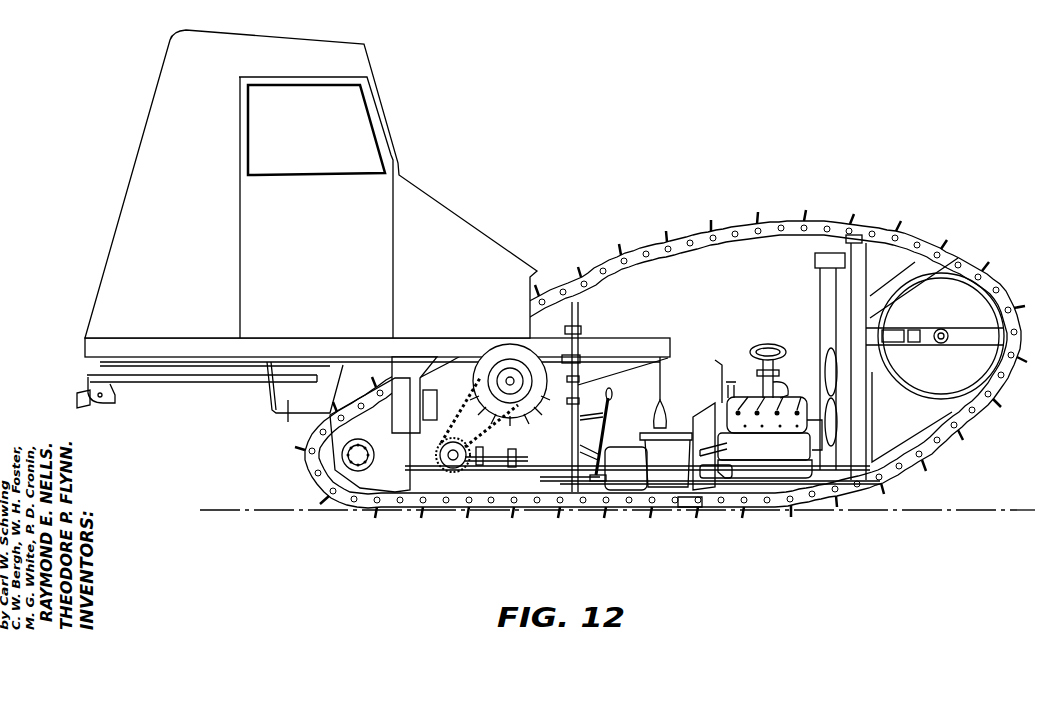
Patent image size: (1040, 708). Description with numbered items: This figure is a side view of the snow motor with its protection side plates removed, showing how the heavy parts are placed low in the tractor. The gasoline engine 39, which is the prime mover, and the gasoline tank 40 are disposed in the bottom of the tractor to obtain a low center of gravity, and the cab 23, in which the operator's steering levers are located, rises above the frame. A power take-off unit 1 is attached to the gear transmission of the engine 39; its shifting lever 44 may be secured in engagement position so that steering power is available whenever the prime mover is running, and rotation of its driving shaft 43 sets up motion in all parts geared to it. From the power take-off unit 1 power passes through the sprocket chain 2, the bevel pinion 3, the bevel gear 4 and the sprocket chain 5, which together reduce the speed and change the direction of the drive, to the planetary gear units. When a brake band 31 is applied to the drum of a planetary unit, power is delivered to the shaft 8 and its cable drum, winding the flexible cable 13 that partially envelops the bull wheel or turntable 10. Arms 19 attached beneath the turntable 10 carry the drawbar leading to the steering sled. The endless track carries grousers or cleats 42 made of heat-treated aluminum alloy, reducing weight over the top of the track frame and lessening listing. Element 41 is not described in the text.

The power take-off unit 1 is at (663, 423).
The sprocket chain 2 is at (500, 455).
The bevel pinion 3 is at (486, 446).
The bevel gear 4 is at (440, 452).
The sprocket chain 5 is at (470, 400).
The shaft 8 is at (510, 380).
The bull wheel or turntable 10 is at (97, 360).
The flexible cable 13 is at (212, 373).
The arm 19 is at (125, 383).
The cab 23 is at (118, 225).
The brake band 31 is at (530, 405).
The gasoline engine 39 is at (800, 460).
The gasoline tank 40 is at (887, 402).
The track roller 41 is at (690, 508).
The track grousers or cleats 42 is at (772, 225).
The driving shaft 43 is at (552, 494).
The shifting lever 44 is at (609, 440).